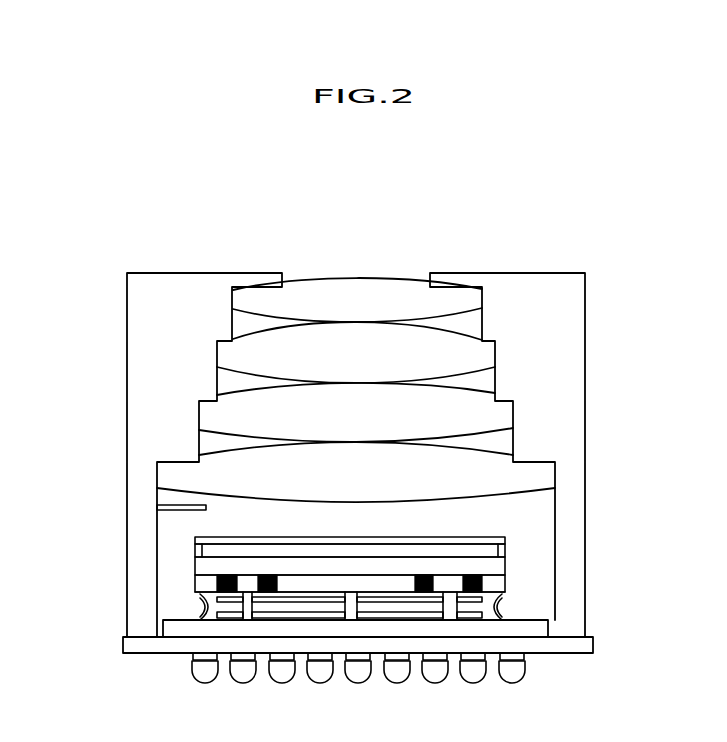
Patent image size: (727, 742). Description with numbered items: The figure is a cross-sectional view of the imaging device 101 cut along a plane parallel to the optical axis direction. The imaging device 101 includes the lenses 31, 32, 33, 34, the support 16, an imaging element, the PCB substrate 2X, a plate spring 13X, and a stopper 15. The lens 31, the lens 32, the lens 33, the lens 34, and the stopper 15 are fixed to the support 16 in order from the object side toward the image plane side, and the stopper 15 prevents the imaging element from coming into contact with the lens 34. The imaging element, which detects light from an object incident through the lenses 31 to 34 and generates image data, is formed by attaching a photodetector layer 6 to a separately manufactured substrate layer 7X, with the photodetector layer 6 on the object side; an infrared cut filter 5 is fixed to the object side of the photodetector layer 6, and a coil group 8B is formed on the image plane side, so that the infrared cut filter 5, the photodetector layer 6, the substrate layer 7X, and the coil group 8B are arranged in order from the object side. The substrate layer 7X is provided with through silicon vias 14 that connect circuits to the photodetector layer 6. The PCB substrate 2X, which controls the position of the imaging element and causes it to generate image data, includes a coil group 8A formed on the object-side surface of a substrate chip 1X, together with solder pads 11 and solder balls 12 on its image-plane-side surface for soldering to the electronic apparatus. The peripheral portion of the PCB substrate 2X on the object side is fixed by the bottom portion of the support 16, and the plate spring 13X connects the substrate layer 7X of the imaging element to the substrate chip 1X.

The imaging device 101 is at (549, 235).
The support 16 is at (175, 308).
The lens 31 is at (463, 299).
The lens 32 is at (470, 361).
The lens 33 is at (487, 417).
The lens 34 is at (527, 482).
The stopper 15 is at (173, 507).
The infrared cut filter 5 is at (500, 541).
The photodetector layer 6 is at (500, 568).
The through silicon vias 14 is at (215, 579).
The substrate layer 7X is at (497, 584).
The plate spring 13X is at (202, 591).
The coil group 8A is at (215, 607).
The coil group 8B is at (500, 608).
The substrate chip 1X is at (538, 627).
The PCB substrate 2X is at (133, 645).
The solder pads 11 is at (190, 658).
The solder balls 12 is at (193, 672).